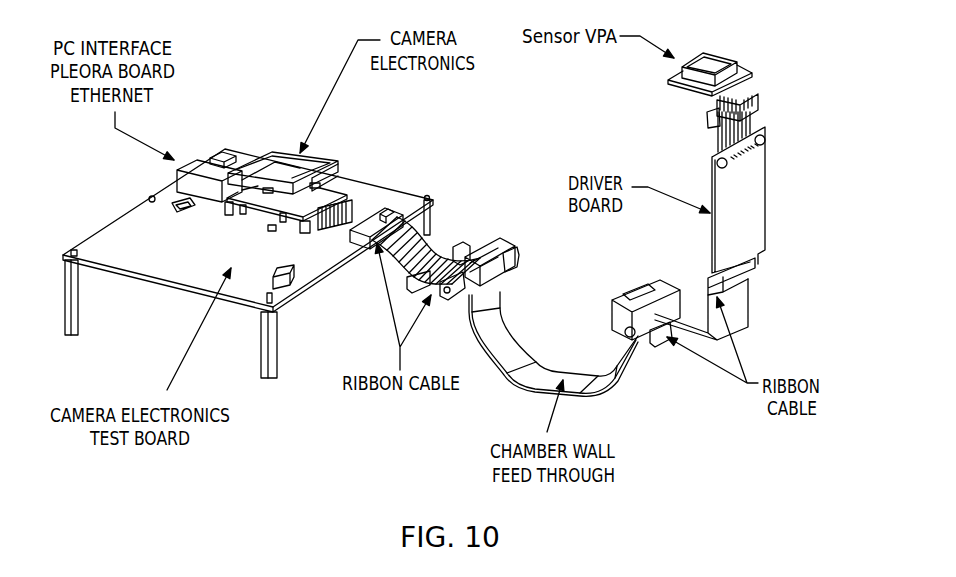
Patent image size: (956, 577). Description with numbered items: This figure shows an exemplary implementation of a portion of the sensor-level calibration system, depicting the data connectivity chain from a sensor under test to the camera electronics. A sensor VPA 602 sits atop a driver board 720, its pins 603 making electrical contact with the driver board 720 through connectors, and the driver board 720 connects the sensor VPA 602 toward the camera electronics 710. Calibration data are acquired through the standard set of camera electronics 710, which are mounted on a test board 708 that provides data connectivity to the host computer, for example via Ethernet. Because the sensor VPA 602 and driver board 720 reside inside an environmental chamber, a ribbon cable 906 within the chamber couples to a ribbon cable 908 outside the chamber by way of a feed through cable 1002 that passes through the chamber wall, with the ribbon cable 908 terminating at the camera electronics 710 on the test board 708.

The sensor VPA 602 is at (752, 61).
The pins 603 is at (755, 80).
The test board 708 is at (143, 283).
The camera electronics 710 is at (342, 154).
The driver board 720 is at (768, 183).
The ribbon cable 906 is at (752, 317).
The ribbon cable 908 is at (438, 251).
The feed through cable 1002 is at (560, 363).